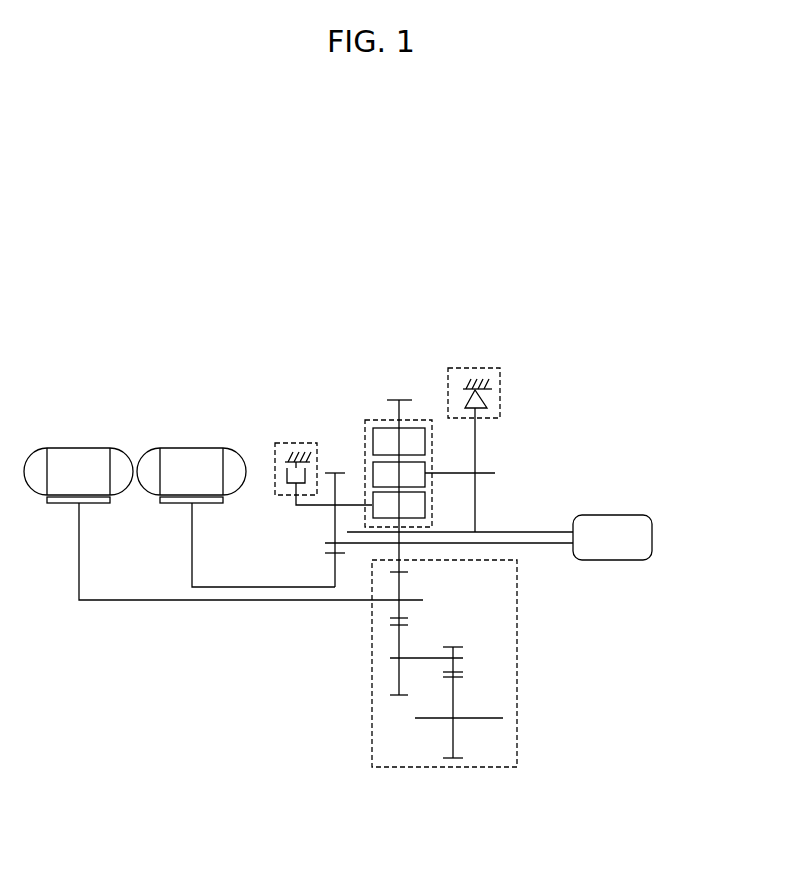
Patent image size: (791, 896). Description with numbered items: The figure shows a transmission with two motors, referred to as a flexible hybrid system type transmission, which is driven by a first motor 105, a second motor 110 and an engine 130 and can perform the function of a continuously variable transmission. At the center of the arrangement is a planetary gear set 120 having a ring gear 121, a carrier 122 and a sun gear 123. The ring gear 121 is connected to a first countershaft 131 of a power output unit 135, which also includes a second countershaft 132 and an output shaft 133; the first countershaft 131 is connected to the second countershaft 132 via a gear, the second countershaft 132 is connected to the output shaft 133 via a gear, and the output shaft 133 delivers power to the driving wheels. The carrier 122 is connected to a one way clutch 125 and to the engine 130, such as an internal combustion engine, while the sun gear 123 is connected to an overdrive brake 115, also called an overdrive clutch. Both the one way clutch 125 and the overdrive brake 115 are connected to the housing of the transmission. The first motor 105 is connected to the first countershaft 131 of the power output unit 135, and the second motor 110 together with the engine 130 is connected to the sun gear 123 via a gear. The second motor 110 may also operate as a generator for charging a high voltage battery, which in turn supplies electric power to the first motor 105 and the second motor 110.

The first motor 105 is at (81, 446).
The second motor 110 is at (192, 446).
The overdrive brake 115 is at (296, 443).
The planetary gear set 120 is at (445, 526).
The ring gear 121 is at (425, 441).
The carrier 122 is at (425, 466).
The sun gear 123 is at (425, 504).
The one way clutch 125 is at (468, 368).
The engine 130 is at (613, 515).
The first countershaft 131 is at (383, 602).
The second countershaft 132 is at (413, 660).
The output shaft 133 is at (428, 720).
The power output unit 135 is at (460, 686).